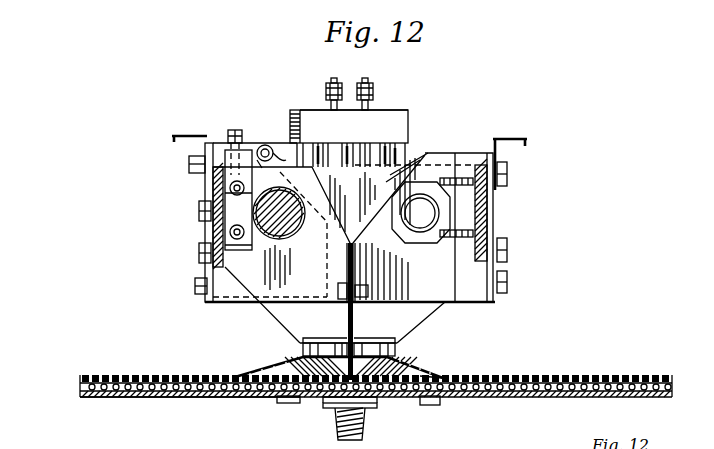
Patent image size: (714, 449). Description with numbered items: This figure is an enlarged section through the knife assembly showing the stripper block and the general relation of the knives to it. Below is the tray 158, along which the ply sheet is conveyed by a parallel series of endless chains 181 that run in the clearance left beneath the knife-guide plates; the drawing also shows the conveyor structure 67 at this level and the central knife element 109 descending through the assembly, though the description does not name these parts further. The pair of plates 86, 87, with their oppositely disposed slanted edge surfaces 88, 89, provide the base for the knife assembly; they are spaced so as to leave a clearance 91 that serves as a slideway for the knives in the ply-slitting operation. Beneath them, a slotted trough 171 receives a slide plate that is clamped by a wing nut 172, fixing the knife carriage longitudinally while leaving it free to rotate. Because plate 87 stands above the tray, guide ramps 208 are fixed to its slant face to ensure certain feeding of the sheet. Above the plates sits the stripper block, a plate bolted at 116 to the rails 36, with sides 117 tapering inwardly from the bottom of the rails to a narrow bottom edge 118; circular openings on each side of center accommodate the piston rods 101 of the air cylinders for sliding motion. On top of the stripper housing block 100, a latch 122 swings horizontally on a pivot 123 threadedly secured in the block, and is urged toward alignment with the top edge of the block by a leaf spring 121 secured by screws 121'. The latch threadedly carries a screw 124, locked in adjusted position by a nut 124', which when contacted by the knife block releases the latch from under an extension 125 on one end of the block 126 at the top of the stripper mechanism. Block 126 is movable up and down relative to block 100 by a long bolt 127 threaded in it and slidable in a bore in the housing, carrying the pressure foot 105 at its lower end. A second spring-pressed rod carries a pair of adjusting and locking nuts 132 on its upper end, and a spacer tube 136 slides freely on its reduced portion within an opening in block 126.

The rails 36 is at (218, 226).
The conveyor rail 67 is at (566, 360).
The plate 86 is at (282, 372).
The plate 87 is at (428, 368).
The slanted edge surface 88 is at (292, 400).
The slanted edge surface 89 is at (437, 405).
The clearance 91 is at (330, 403).
The stripper housing block 100 is at (398, 165).
The piston rods 101 is at (282, 205).
The pressure foot 105 is at (305, 349).
The knife blade 109 is at (347, 313).
The bolts 116 is at (430, 300).
The sides 117 is at (283, 320).
The bottom edge 118 is at (390, 343).
The leaf spring 121 is at (239, 179).
The screws 121' is at (193, 219).
The latch 122 is at (297, 145).
The pivot 123 is at (229, 148).
The screw 124 is at (261, 124).
The nut 124' is at (290, 173).
The extension 125 is at (294, 110).
The block 126 is at (309, 110).
The long bolt 127 is at (314, 148).
The adjusting and locking nuts 132 is at (341, 84).
The spacer tube 136 is at (345, 152).
The tray 158 is at (525, 393).
The trough 171 is at (386, 408).
The wing nut 172 is at (365, 430).
The endless chains 181 is at (243, 398).
The guide ramps 208 is at (182, 132).